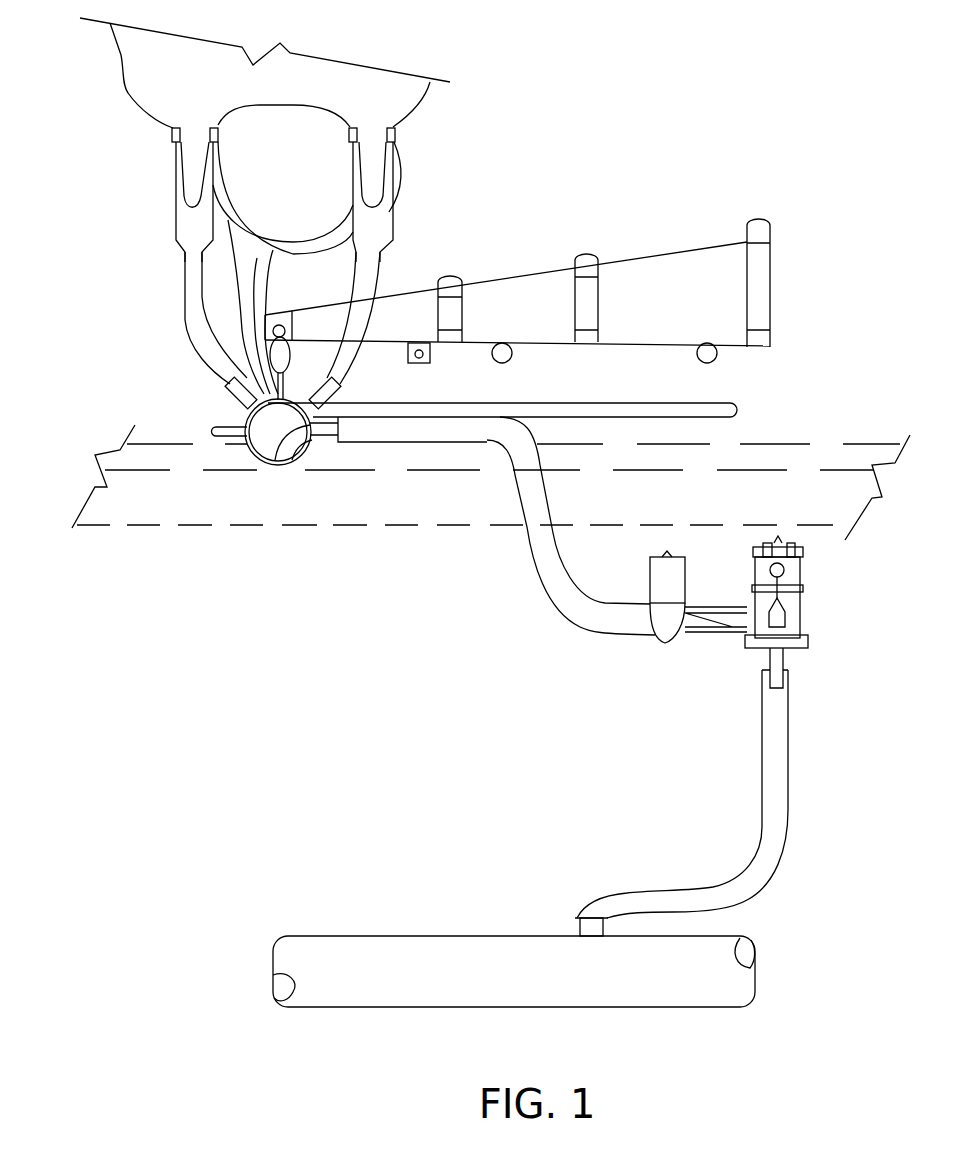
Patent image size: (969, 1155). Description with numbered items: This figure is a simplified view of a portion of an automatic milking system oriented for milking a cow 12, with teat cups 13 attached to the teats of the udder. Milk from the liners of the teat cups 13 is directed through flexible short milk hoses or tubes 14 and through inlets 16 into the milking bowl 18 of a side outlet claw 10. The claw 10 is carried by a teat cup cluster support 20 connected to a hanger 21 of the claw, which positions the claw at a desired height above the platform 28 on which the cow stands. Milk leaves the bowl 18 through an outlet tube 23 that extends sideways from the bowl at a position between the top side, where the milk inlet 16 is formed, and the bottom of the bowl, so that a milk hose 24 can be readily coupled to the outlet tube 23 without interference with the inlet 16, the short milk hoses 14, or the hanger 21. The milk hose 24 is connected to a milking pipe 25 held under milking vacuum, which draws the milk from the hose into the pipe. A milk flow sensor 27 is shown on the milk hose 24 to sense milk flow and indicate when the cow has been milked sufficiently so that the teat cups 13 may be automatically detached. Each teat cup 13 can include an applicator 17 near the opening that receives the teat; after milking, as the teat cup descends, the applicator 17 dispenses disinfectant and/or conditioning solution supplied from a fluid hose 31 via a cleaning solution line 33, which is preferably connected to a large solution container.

The claw 10 is at (262, 464).
The cow 12 is at (118, 52).
The teat cups 13 is at (175, 207).
The short milk hoses or tubes 14 is at (187, 318).
The inlets 16 is at (238, 396).
The applicator 17 is at (173, 133).
The milking bowl 18 is at (293, 465).
The teat cup cluster support 20 is at (507, 273).
The hanger 21 is at (287, 368).
The outlet tube 23 is at (314, 434).
The milk hose 24 is at (520, 483).
The milking pipe 25 is at (453, 935).
The milk flow sensor 27 is at (803, 588).
The platform 28 is at (452, 525).
The fluid hose 31 is at (400, 182).
The cleaning solution line 33 is at (241, 300).